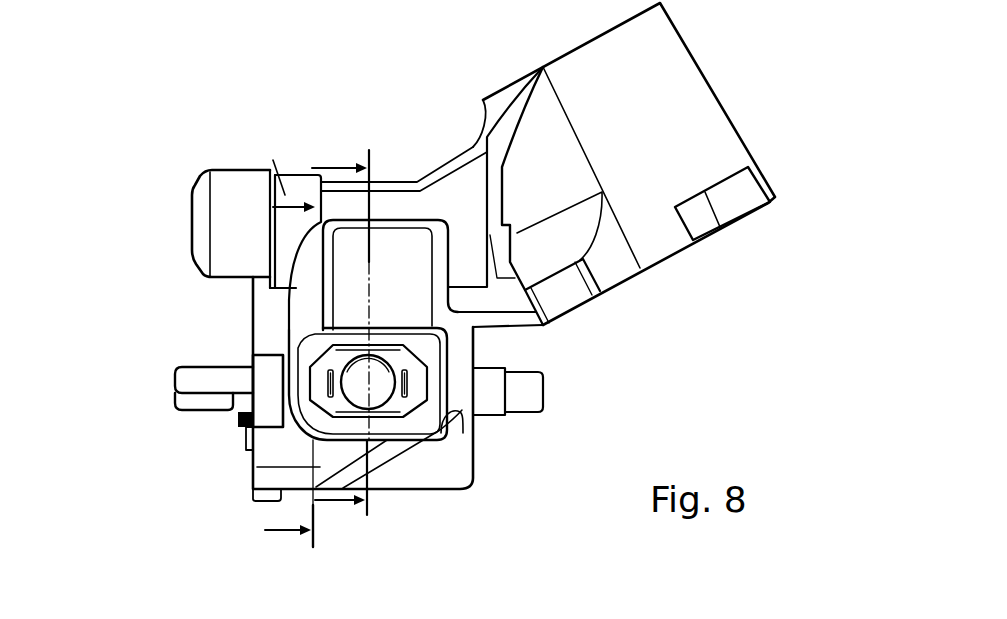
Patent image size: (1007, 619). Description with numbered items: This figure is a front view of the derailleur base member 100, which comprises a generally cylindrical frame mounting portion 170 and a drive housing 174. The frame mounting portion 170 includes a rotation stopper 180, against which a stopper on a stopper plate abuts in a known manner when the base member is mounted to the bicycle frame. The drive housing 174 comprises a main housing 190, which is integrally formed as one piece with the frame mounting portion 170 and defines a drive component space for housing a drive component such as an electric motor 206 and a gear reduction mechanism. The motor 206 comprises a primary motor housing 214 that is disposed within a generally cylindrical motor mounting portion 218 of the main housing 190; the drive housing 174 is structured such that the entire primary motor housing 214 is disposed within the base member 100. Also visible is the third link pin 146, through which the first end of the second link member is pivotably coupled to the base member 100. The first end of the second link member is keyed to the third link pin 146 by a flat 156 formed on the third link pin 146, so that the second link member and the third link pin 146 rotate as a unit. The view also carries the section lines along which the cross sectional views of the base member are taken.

The base member 100 is at (808, 136).
The frame mounting portion 170 is at (683, 77).
The rotation stopper 180 is at (740, 203).
The motor mounting portion 218 is at (427, 288).
The electric motor 206 is at (392, 434).
The primary motor housing 214 is at (408, 408).
The main housing 190 is at (408, 481).
The drive housing 174 is at (228, 298).
The third link pin 146 is at (225, 367).
The flat 156 is at (207, 403).